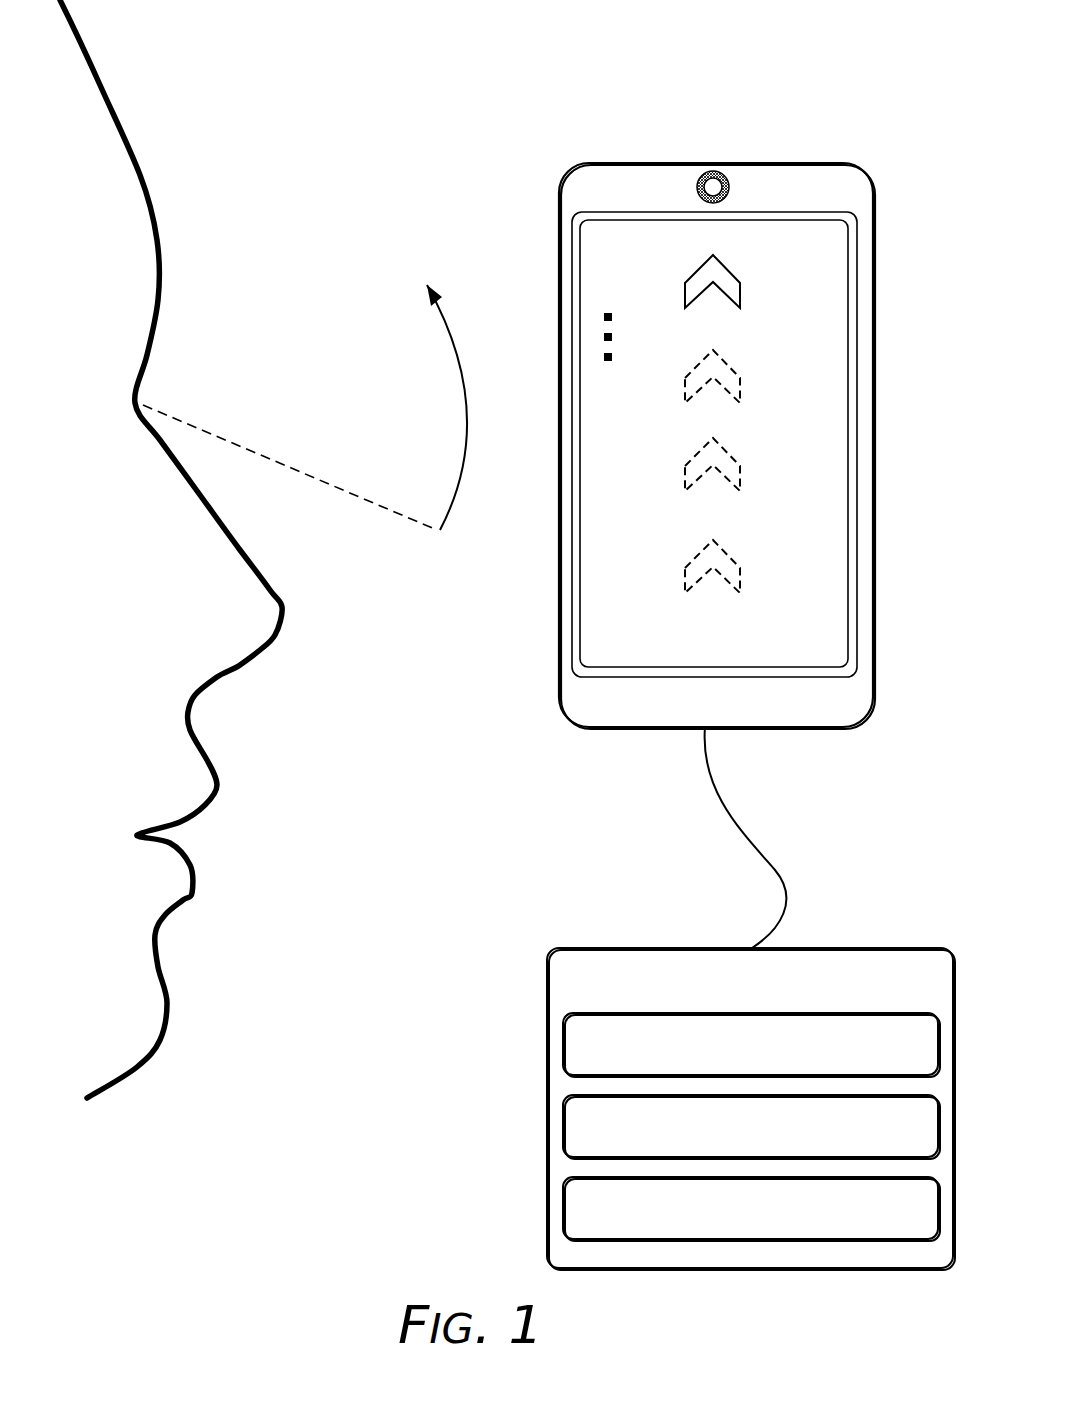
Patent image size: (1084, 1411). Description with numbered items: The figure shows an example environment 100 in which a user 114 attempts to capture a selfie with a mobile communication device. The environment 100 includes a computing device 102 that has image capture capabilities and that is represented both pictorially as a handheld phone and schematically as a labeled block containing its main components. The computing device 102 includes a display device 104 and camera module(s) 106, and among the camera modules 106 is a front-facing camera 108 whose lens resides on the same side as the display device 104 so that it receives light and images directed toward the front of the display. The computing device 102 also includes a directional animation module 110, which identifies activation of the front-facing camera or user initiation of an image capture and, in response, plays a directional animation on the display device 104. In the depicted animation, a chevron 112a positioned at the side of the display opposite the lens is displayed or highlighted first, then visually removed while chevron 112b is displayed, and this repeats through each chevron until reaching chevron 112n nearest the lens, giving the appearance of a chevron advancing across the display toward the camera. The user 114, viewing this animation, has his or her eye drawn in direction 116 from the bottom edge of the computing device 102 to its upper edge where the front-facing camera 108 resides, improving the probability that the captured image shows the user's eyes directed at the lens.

The environment 100 is at (760, 62).
The computing device 102 is at (937, 982).
The display device 104 is at (930, 1056).
The camera module(s) 106 is at (930, 1137).
The front-facing camera 108 is at (713, 168).
The directional animation module 110 is at (930, 1221).
The chevron 112a is at (685, 568).
The chevron 112b is at (685, 466).
The chevron 112n is at (685, 283).
The user 114 is at (162, 250).
The direction 116 is at (461, 346).